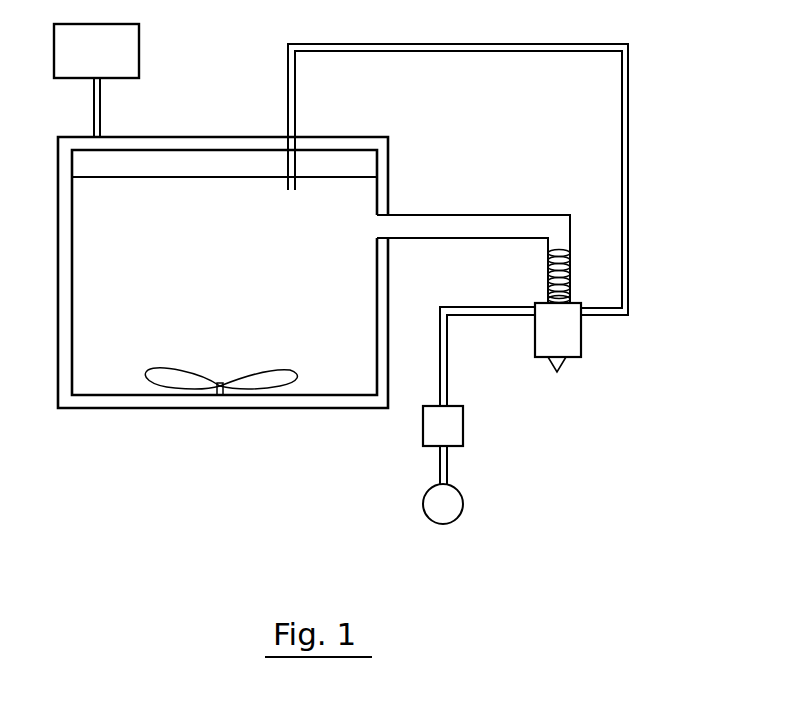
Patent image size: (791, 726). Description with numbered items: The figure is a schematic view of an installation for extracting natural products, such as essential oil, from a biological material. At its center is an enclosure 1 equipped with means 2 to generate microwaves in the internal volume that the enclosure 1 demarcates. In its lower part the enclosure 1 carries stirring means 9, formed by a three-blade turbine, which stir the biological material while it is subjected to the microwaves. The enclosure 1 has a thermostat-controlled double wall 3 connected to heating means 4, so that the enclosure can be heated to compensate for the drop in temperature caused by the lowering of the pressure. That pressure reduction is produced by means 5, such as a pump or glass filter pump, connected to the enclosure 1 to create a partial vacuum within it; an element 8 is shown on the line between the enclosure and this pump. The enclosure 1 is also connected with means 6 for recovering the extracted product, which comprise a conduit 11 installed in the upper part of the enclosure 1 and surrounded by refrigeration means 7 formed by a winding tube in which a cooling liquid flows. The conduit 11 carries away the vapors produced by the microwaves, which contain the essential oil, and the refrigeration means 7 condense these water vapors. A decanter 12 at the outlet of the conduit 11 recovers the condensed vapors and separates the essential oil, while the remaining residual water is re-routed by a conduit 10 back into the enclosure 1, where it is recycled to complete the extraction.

The enclosure 1 is at (343, 128).
The means to generate microwaves 2 is at (366, 163).
The thermostat-controlled double wall 3 is at (216, 138).
The heating means 4 is at (128, 41).
The means enabling the reduction of the pressure 5 is at (463, 503).
The means for the recovery of the natural product 6 is at (537, 279).
The refrigeration means 7 is at (572, 260).
The valve unit 8 is at (450, 427).
The stirring means 9 is at (272, 381).
The conduit 10 is at (628, 142).
The conduit 11 is at (510, 225).
The decanter 12 is at (571, 339).